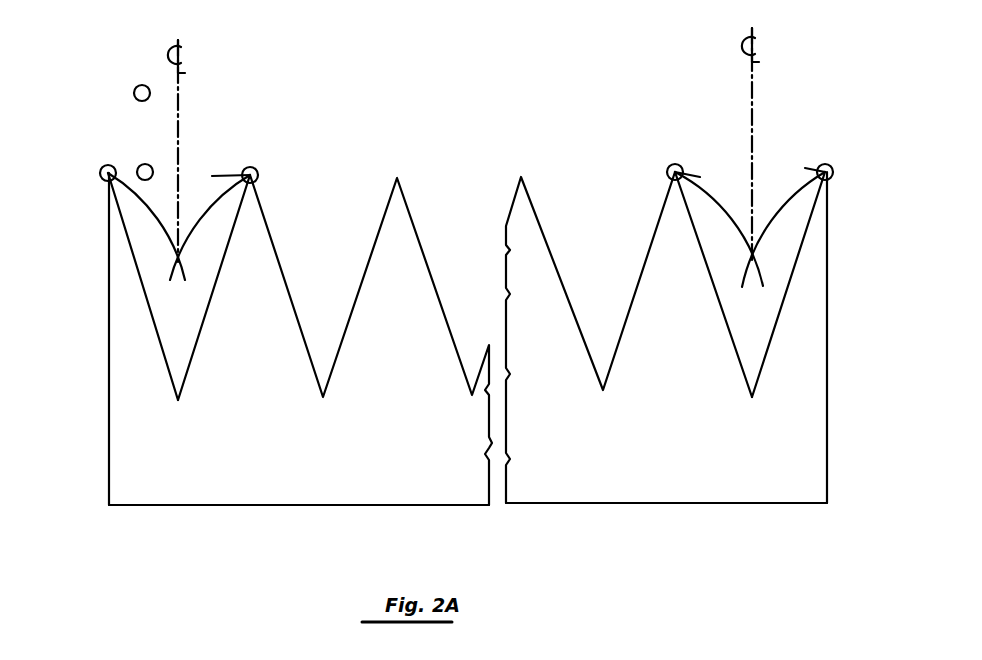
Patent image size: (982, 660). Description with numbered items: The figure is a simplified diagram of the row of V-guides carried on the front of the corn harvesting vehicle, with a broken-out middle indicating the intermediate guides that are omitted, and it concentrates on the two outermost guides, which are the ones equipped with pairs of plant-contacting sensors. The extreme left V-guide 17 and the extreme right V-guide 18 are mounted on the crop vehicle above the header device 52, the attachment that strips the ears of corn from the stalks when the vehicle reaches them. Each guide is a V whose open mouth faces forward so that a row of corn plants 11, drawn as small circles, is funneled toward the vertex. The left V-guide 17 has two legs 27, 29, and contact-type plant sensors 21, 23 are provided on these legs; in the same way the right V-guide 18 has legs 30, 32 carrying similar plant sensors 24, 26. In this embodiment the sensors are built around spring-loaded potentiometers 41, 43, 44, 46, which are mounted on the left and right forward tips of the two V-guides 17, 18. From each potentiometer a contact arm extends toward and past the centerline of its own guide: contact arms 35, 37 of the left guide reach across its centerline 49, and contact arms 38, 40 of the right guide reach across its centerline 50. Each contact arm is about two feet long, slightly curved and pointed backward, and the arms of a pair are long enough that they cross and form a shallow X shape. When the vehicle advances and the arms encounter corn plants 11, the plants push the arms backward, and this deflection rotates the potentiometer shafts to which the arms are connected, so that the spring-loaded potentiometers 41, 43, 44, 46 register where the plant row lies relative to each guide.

The corn plants 11 is at (134, 86).
The extreme left V-guide 17 is at (146, 318).
The extreme right V-guide 18 is at (773, 334).
The plant sensor 21 is at (128, 155).
The plant sensor 23 is at (215, 180).
The plant sensor 24 is at (700, 175).
The plant sensor 26 is at (806, 170).
The leg 27 is at (140, 277).
The leg 29 is at (208, 312).
The leg 30 is at (719, 302).
The leg 32 is at (782, 303).
The contact arm 35 is at (140, 207).
The contact arm 37 is at (210, 212).
The contact arm 38 is at (715, 208).
The contact arm 40 is at (782, 213).
The spring-loaded potentiometer 41 is at (101, 167).
The spring-loaded potentiometer 43 is at (258, 167).
The spring-loaded potentiometer 44 is at (668, 166).
The spring-loaded potentiometer 46 is at (833, 166).
The centerline 49 is at (178, 105).
The centerline 50 is at (752, 92).
The header device 52 is at (607, 505).